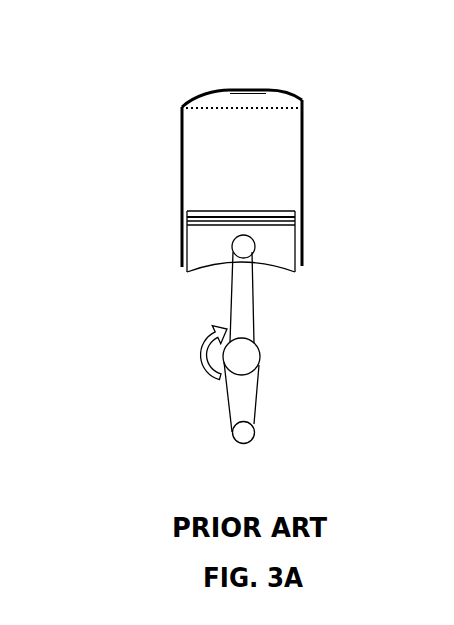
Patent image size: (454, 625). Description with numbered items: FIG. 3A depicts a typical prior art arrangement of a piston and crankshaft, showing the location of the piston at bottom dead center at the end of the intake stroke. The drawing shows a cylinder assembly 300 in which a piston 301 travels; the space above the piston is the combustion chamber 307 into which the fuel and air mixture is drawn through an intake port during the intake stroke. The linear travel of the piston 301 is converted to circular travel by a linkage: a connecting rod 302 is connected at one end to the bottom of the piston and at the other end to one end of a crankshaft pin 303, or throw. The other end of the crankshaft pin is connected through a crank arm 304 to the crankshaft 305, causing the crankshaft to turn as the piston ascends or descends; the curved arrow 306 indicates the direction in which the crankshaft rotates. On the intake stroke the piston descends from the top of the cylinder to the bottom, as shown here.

The engine cylinder assembly 300 is at (303, 145).
The piston 301 is at (204, 238).
The connecting rod 302 is at (253, 308).
The crank pin journal 303 is at (265, 353).
The crank arm 304 is at (258, 403).
The crankshaft main bearing 305 is at (225, 428).
The crankshaft rotation direction 306 is at (193, 342).
The combustion chamber 307 is at (230, 170).